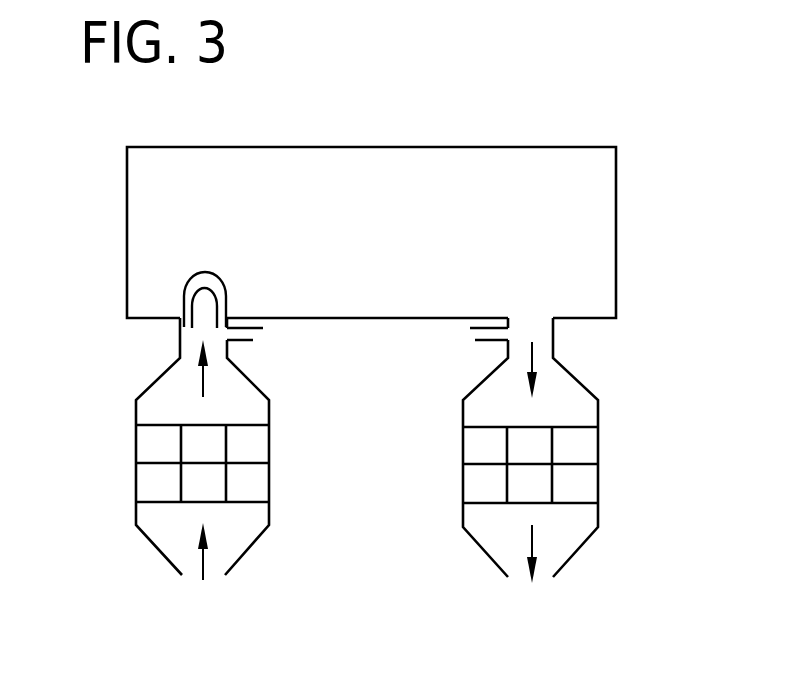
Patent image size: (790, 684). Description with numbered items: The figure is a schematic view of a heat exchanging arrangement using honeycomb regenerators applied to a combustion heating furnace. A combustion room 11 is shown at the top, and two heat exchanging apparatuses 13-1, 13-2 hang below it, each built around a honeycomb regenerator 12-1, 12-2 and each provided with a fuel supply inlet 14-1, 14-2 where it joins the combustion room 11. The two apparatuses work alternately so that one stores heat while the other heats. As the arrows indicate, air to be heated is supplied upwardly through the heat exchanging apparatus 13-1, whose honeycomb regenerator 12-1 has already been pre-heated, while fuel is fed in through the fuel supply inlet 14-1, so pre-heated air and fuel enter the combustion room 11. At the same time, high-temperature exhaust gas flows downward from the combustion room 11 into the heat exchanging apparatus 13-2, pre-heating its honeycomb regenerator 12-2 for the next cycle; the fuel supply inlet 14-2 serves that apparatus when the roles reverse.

The combustion room 11 is at (524, 147).
The honeycomb regenerator 12-1 is at (250, 547).
The honeycomb regenerator 12-2 is at (579, 548).
The heat exchanging apparatus 13-1 is at (131, 452).
The heat exchanging apparatus 13-2 is at (690, 446).
The fuel supply inlet 14-1 is at (252, 342).
The fuel supply inlet 14-2 is at (476, 342).